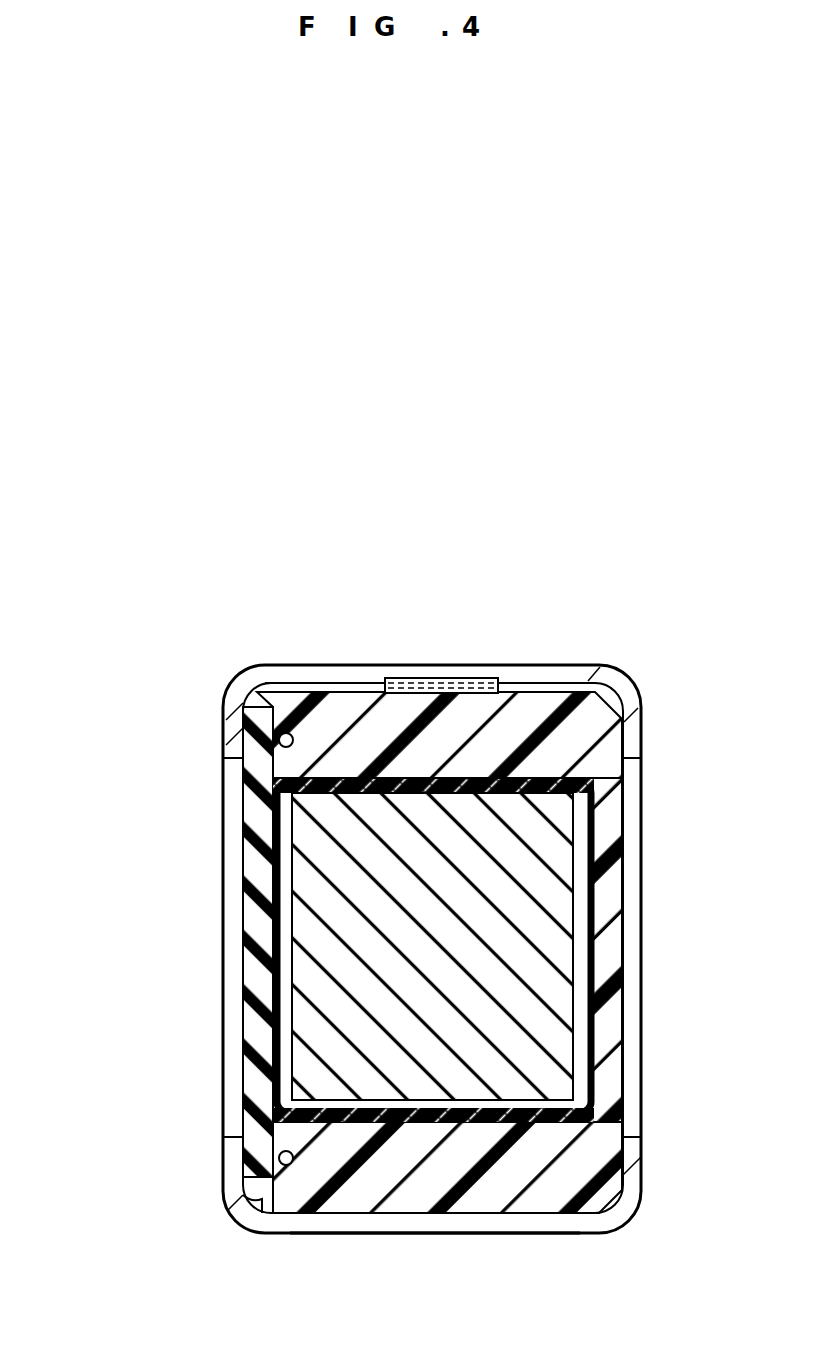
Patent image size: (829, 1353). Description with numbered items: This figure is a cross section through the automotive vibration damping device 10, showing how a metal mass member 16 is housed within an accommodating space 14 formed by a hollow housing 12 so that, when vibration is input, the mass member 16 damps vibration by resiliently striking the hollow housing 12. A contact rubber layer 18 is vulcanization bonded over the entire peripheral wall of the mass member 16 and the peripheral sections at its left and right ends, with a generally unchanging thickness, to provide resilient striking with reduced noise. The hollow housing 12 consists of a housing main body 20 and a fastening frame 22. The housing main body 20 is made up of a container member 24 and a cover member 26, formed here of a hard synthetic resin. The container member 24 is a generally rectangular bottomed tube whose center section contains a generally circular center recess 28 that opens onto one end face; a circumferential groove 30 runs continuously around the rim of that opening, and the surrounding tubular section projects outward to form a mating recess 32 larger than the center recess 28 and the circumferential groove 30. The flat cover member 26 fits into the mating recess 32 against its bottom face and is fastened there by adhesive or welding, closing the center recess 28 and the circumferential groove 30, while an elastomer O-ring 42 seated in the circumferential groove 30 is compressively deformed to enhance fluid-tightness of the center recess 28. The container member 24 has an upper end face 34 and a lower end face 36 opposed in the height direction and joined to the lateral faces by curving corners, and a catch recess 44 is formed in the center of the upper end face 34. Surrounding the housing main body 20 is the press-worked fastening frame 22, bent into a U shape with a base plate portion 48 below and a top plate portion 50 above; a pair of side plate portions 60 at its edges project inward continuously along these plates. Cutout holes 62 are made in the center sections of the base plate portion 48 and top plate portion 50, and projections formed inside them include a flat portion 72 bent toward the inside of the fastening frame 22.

The automotive vibration damping device 10 is at (193, 615).
The hollow housing 12 is at (200, 746).
The accommodating space 14 is at (604, 881).
The mass member 16 is at (407, 963).
The contact rubber layer 18 is at (530, 1122).
The housing main body 20 is at (646, 1022).
The fastening frame 22 is at (647, 1222).
The container member 24 is at (503, 1185).
The cover member 26 is at (272, 1037).
The center recess 28 is at (480, 790).
The circumferential groove 30 is at (287, 1168).
The mating recess 32 is at (268, 1176).
The upper end face 34 is at (560, 688).
The lower end face 36 is at (395, 1215).
The O-ring 42 is at (286, 733).
The catch recess 44 is at (492, 683).
The base plate portion 48 is at (440, 1195).
The top plate portion 50 is at (313, 680).
The side plate portions 60 is at (635, 742).
The cutout holes 62 is at (528, 688).
The flat portion 72 is at (424, 680).